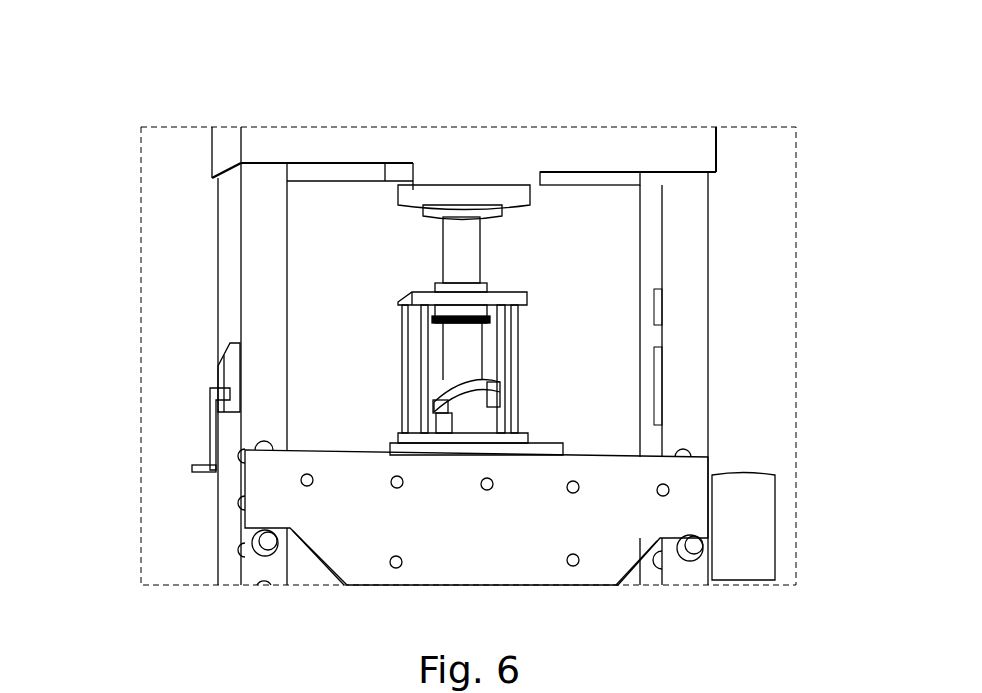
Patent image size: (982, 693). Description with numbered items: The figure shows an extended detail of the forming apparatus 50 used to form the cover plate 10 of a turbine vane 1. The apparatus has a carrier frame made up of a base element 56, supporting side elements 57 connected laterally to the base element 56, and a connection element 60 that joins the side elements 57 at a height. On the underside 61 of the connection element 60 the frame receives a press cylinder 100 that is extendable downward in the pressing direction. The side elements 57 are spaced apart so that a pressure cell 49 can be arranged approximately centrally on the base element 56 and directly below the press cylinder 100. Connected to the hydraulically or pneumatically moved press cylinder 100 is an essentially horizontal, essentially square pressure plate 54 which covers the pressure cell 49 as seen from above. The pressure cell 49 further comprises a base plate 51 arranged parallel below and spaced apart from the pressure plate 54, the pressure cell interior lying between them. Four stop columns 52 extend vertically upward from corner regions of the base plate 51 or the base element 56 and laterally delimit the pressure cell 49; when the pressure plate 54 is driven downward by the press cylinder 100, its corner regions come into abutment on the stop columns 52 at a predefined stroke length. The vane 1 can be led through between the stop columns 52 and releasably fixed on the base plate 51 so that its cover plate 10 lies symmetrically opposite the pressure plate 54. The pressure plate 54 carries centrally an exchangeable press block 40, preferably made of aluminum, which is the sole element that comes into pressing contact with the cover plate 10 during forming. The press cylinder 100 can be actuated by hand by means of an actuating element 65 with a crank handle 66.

The vane 1 is at (467, 410).
The cover plate 10 is at (471, 383).
The press block 40 is at (462, 310).
The pressure cell 49 is at (390, 389).
The forming apparatus 50 is at (730, 133).
The base plate 51 is at (505, 425).
The stop columns 52 is at (500, 337).
The pressure plate 54 is at (523, 290).
The base element 56 is at (687, 503).
The side elements 57 is at (237, 192).
The connection element 60 is at (643, 138).
The underside 61 is at (578, 178).
The actuating element 65 is at (212, 398).
The crank handle 66 is at (208, 450).
The press cylinder 100 is at (467, 253).